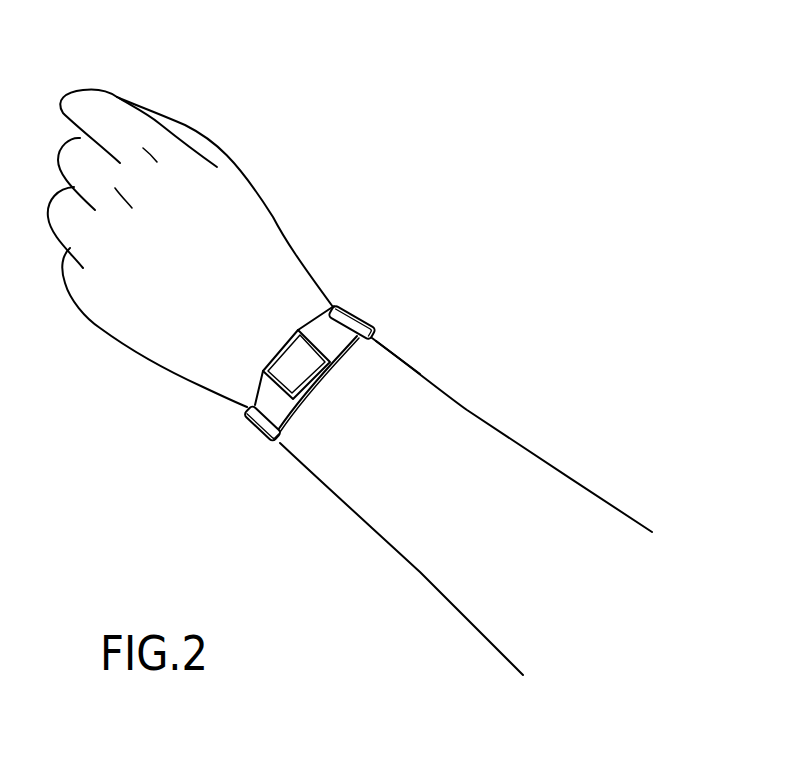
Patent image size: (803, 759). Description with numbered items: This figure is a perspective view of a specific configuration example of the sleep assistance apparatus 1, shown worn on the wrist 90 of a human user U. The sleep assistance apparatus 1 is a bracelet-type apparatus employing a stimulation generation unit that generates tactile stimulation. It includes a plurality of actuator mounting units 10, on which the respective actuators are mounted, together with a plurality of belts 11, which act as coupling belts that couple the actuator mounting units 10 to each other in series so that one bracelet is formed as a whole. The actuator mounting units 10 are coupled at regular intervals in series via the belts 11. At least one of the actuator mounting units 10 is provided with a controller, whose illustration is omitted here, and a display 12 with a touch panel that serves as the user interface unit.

The user U is at (171, 102).
The sleep assistance apparatus 1 is at (392, 252).
The actuator mounting unit 10 is at (282, 345).
The belt 11 is at (317, 325).
The display 12 is at (270, 360).
The wrist 90 is at (374, 364).